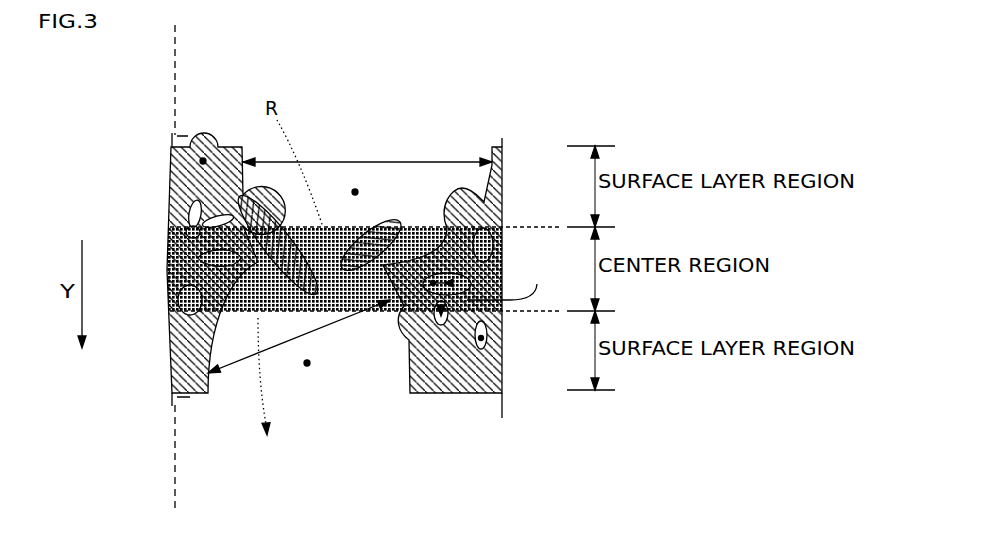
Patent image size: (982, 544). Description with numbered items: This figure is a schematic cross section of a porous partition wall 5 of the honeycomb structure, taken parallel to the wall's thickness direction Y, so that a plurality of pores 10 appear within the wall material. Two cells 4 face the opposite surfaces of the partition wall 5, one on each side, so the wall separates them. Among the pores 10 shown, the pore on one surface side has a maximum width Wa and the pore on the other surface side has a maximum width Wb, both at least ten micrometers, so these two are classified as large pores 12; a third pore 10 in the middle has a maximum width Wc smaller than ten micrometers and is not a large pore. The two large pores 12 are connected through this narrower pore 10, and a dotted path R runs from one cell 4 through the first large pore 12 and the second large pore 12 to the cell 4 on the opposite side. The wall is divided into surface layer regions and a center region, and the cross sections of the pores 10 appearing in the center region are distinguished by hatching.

The cell 4 is at (160, 88).
The partition wall 5 is at (160, 187).
The pore 10 is at (203, 158).
The large pore 12 is at (365, 299).